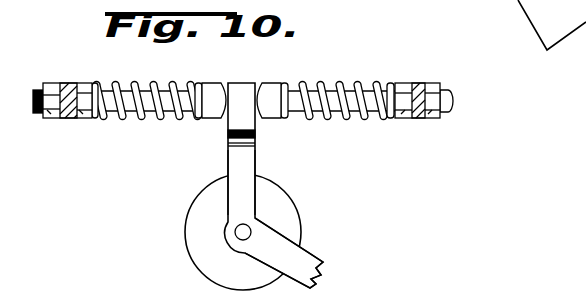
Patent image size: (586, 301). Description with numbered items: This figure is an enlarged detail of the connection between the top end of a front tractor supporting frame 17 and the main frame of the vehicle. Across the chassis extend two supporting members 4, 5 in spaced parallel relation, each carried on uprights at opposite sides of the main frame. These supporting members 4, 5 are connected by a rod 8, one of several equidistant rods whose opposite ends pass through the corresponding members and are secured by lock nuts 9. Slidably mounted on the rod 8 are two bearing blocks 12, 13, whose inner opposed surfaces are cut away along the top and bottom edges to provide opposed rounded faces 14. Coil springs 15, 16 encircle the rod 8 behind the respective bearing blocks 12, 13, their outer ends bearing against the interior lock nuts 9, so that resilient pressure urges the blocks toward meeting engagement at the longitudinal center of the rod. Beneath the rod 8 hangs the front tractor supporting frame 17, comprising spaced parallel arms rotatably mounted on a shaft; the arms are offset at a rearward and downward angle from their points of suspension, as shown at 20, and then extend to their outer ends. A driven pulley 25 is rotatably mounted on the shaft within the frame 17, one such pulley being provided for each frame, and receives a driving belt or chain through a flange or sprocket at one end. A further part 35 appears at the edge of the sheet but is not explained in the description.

The left nut 4 is at (67, 83).
The right nut 5 is at (416, 83).
The shaft 8 is at (346, 84).
The lock notches 9 is at (80, 119).
The left collar 12 is at (210, 83).
The right collar 13 is at (276, 83).
The central rod 14 is at (251, 90).
The left spring 15 is at (140, 121).
The right spring 16 is at (346, 121).
The stem 17 is at (228, 168).
The arm 20 is at (314, 257).
The disc 25 is at (185, 216).
The bracket 35 is at (534, 25).